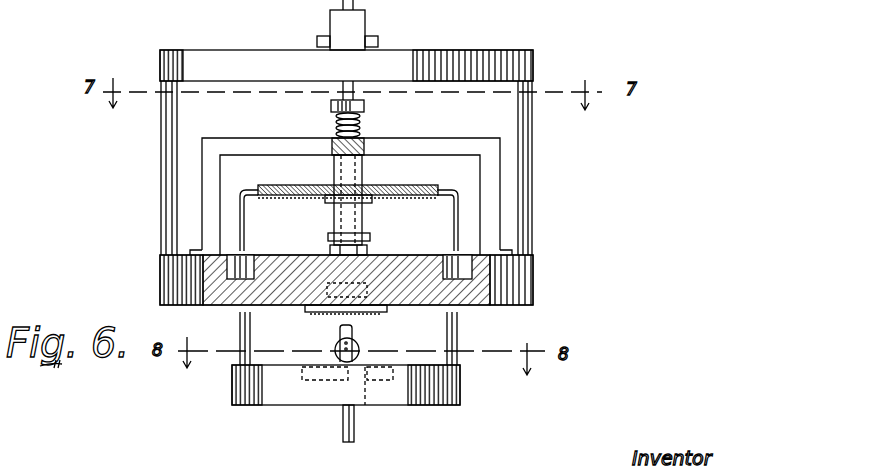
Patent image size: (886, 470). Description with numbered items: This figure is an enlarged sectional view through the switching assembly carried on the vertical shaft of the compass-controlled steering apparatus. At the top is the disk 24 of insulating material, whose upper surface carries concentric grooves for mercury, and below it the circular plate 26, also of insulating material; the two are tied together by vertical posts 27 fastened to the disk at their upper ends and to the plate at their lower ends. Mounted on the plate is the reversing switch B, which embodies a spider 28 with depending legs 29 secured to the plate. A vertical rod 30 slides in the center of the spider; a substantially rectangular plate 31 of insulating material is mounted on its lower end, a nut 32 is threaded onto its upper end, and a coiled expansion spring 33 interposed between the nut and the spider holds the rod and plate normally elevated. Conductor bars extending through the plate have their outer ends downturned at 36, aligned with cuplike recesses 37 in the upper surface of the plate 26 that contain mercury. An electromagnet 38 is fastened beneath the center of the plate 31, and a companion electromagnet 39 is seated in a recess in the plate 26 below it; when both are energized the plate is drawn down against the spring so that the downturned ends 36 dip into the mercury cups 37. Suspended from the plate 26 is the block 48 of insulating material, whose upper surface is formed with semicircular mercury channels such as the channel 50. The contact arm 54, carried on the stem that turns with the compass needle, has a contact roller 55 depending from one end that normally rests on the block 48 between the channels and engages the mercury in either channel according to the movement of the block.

The disk 24 is at (412, 60).
The circular plate 26 is at (517, 292).
The vertical posts 27 is at (529, 181).
The spider 28 is at (393, 147).
The depending legs 29 is at (490, 223).
The vertical rod 30 is at (360, 119).
The rectangular plate 31 is at (282, 177).
The nut 32 is at (331, 104).
The coiled expansion spring 33 is at (336, 128).
The downturned ends 36 is at (243, 244).
The cuplike recesses 37 is at (227, 263).
The electromagnet 38 is at (356, 232).
The electromagnets 39 is at (358, 252).
The block 48 is at (296, 393).
The channel 50 is at (365, 405).
The contact arm 54 is at (353, 338).
The contact roller 55 is at (340, 356).
The reversing switch B is at (385, 185).